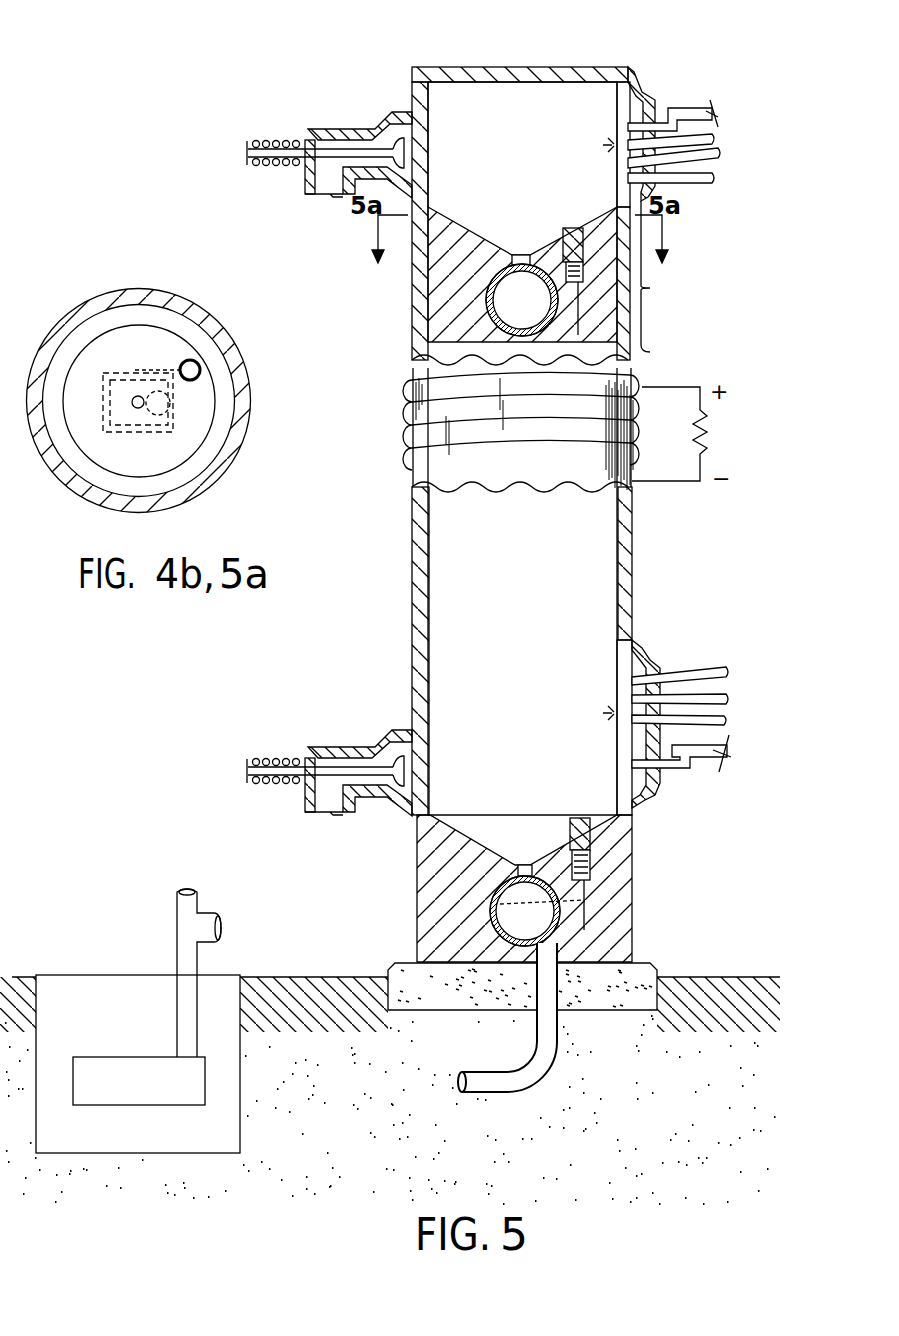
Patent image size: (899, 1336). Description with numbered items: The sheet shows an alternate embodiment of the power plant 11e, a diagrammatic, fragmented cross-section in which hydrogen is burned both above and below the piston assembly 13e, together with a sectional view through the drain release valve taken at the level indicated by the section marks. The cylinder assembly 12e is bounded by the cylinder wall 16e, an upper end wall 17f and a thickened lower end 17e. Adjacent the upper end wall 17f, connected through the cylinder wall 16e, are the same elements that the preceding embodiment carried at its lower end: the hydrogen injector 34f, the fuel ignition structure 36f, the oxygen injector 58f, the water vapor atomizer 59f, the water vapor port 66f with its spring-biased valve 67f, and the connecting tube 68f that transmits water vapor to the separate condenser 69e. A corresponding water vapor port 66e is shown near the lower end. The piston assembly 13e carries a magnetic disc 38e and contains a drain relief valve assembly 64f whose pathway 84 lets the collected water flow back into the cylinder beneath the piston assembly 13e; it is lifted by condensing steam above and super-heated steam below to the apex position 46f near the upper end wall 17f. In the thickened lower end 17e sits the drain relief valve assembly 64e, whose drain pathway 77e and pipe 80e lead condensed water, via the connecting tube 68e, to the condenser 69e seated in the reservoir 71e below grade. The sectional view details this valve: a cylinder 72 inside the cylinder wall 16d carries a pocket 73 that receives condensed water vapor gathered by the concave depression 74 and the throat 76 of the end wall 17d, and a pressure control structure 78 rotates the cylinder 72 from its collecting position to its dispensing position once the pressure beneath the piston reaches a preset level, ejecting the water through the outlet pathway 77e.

In FIG. 5, the upper end wall 17f is at (513, 66).
In FIG. 5, the water vapor port 66f is at (382, 110).
In FIG. 5, the spring-biased valve 67f is at (276, 142).
In FIG. 5, the connecting tube 68f is at (306, 203).
In FIG. 5, the fuel ignition structure 36f is at (690, 106).
In FIG. 5, the water vapor atomizer 59f is at (720, 140).
In FIG. 5, the oxygen injector 58f is at (724, 158).
In FIG. 5, the hydrogen injector 34f is at (694, 154).
In FIG. 5, the apex position 46f is at (666, 276).
In FIG. 5, the piston assembly 13e is at (597, 297).
In FIG. 5, the drain relief valve assembly 64f is at (470, 283).
In FIG. 5, the magnetic disc 38e is at (438, 312).
In FIG. 5, the pathway 84 is at (600, 370).
In FIG. 4B, the pathway 84 is at (162, 393).
In FIG. 5, the power plant 11e is at (702, 514).
In FIG. 5, the cylinder wall 16e is at (416, 572).
In FIG. 5, the cylinder assembly 12e is at (640, 603).
In FIG. 5, the water vapor port 66e is at (329, 753).
In FIG. 5, the drain relief valve assembly 64e is at (468, 880).
In FIG. 5, the thickened lower end 17e is at (417, 916).
In FIG. 5, the ball joint outlet pipe 80e is at (500, 923).
In FIG. 5, the drain pathway 77e is at (222, 928).
In FIG. 5, the connecting tube 68e is at (190, 908).
In FIG. 5, the condenser 69e is at (107, 1063).
In FIG. 5, the reservoir 71e is at (228, 1128).
In FIG. 4B, the cylinder 72 is at (139, 386).
In FIG. 4B, the cylinder wall 16d is at (224, 452).
In FIG. 4B, the end wall 17d is at (226, 418).
In FIG. 4B, the concave depression 74 is at (130, 335).
In FIG. 4B, the pocket 73 is at (172, 430).
In FIG. 4B, the throat 76 is at (134, 398).
In FIG. 4B, the pressure control structure 78 is at (196, 361).